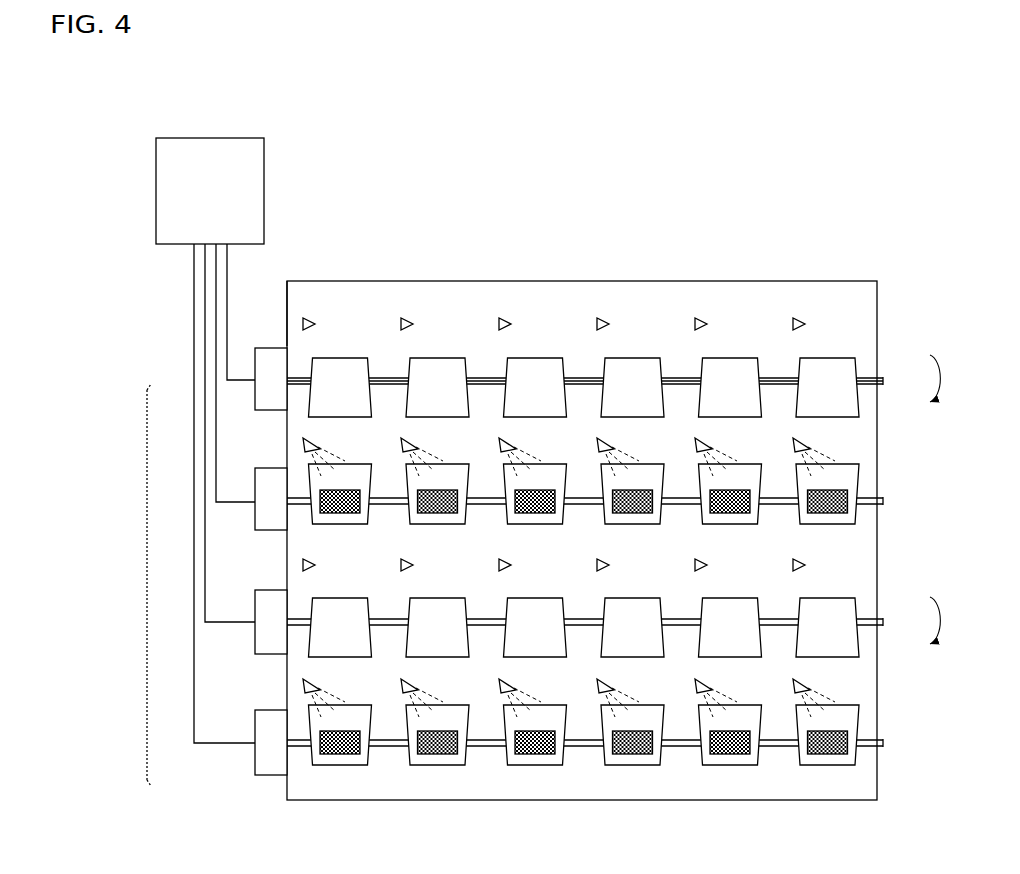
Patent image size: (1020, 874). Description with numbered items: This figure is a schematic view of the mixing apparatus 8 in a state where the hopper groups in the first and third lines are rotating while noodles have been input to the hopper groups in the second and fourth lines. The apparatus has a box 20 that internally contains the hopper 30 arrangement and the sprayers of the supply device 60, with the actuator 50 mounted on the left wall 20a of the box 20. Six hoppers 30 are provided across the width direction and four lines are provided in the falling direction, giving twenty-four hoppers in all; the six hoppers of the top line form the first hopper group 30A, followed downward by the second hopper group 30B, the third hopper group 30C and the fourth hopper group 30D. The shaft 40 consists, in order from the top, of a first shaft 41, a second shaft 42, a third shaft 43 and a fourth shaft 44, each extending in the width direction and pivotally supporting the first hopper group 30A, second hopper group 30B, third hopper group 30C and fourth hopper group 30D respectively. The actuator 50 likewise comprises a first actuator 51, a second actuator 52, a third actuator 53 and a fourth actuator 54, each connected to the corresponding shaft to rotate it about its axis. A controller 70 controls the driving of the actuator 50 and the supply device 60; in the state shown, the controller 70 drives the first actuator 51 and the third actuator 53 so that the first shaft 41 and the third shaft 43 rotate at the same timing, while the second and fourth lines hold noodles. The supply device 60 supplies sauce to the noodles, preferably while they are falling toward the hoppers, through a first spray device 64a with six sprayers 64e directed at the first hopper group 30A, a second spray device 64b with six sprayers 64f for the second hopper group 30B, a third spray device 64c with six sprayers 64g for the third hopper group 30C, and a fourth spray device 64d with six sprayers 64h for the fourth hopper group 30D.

The mixing apparatus 8 is at (145, 98).
The controller 70 is at (156, 185).
The box 20 is at (840, 281).
The left wall 20a is at (287, 308).
The hopper 30 is at (627, 546).
The first hopper group 30A is at (863, 362).
The second hopper group 30B is at (863, 483).
The third hopper group 30C is at (863, 603).
The fourth hopper group 30D is at (863, 724).
The shaft 40 is at (884, 381).
The first shaft 41 is at (870, 389).
The second shaft 42 is at (870, 505).
The third shaft 43 is at (870, 628).
The fourth shaft 44 is at (870, 749).
The actuator 50 is at (147, 570).
The first actuator 51 is at (255, 407).
The second actuator 52 is at (255, 523).
The third actuator 53 is at (255, 641).
The fourth actuator 54 is at (255, 762).
The supply device 60 is at (505, 318).
The first spray device 64a is at (318, 328).
The second spray device 64b is at (320, 441).
The third spray device 64c is at (318, 569).
The fourth spray device 64d is at (320, 682).
The sprayer 64e is at (303, 325).
The sprayer 64f is at (303, 445).
The sprayer 64g is at (303, 567).
The sprayer 64h is at (303, 687).